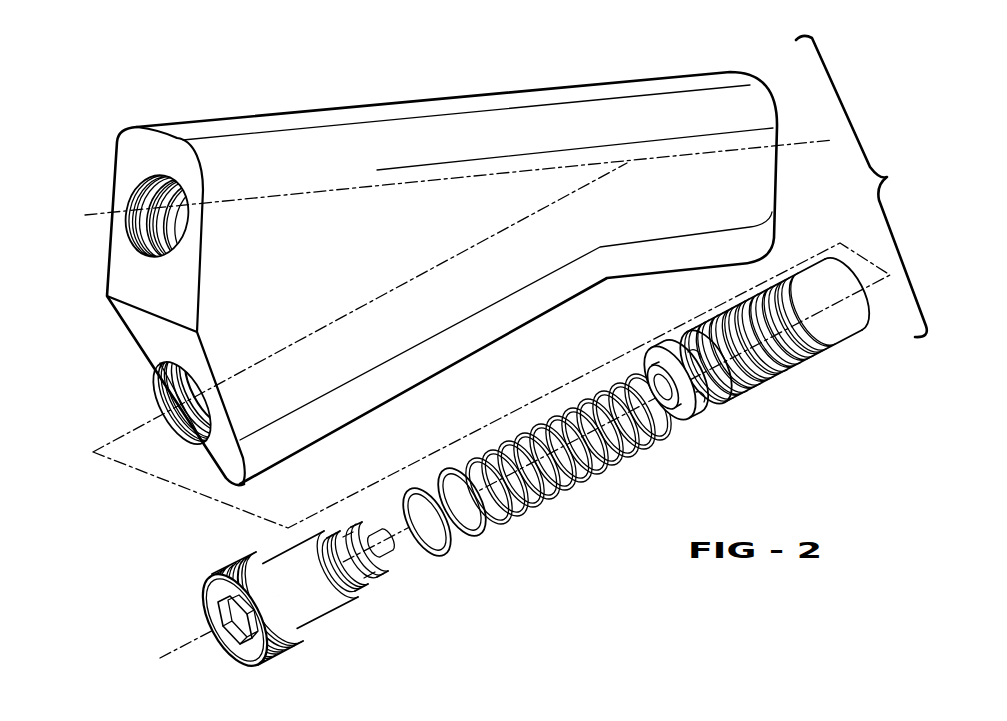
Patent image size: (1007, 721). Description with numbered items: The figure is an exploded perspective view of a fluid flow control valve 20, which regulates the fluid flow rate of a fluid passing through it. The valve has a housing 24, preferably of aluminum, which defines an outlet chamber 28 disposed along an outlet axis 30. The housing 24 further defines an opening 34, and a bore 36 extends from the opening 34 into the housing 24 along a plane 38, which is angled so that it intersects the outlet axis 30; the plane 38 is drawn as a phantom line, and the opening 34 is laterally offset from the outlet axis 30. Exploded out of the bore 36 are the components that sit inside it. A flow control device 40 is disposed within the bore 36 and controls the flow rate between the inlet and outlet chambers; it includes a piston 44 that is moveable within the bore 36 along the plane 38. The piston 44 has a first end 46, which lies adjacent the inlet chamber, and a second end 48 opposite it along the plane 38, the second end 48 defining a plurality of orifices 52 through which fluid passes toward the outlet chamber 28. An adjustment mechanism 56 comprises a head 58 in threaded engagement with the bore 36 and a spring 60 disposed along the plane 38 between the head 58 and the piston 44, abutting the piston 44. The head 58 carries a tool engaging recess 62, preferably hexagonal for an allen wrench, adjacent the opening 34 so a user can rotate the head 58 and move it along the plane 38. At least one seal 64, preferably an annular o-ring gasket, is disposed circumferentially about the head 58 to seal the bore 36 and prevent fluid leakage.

The fluid flow control valve 20 is at (427, 248).
The housing 24 is at (323, 107).
The outlet chamber 28 is at (143, 190).
The outlet axis 30 is at (793, 140).
The opening 34 is at (150, 388).
The bore 36 is at (192, 437).
The plane 38 is at (120, 437).
The flow control device 40 is at (783, 355).
The piston 44 is at (745, 395).
The first end 46 is at (868, 308).
The second end 48 is at (698, 407).
The orifice 52 is at (700, 410).
The adjustment mechanism 56 is at (469, 546).
The head 58 is at (292, 613).
The spring 60 is at (575, 485).
The tool engaging recess 62 is at (245, 640).
The seal 64 is at (482, 535).